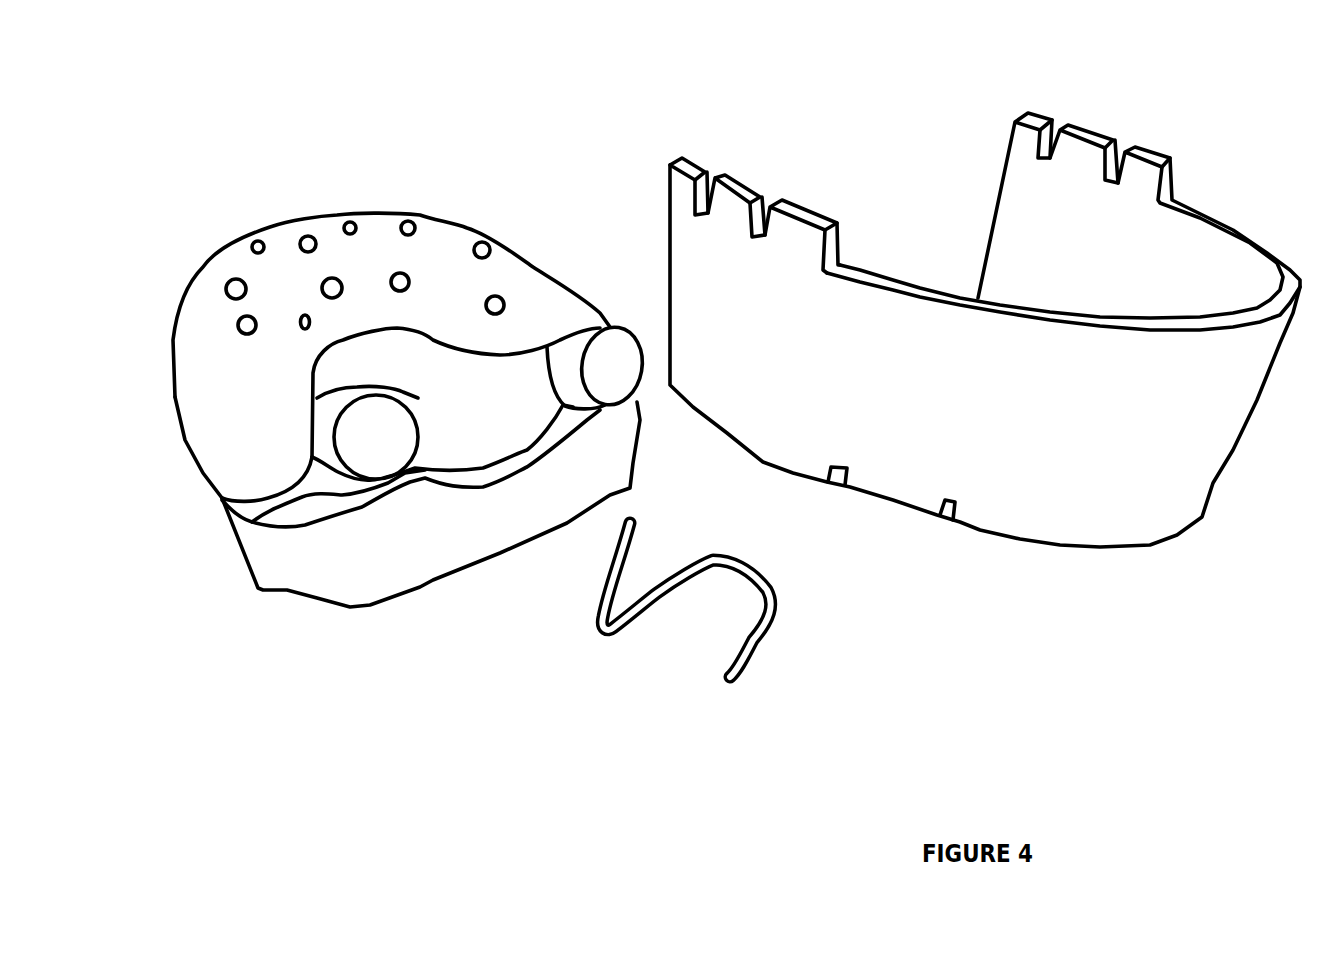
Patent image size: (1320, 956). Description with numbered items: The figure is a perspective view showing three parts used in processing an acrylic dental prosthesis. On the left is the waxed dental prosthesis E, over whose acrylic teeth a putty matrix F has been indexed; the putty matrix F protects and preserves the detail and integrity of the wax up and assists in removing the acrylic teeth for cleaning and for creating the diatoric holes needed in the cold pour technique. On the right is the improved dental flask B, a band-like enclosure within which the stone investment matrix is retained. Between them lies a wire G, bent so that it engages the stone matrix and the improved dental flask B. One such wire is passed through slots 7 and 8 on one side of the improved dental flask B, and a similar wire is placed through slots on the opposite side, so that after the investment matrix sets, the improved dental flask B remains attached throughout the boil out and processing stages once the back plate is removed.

The improved dental flask B is at (982, 140).
The waxed dental prosthesis E is at (285, 618).
The putty matrix F is at (317, 195).
The wire G is at (669, 655).
The slot 7 is at (833, 497).
The slot 8 is at (942, 527).